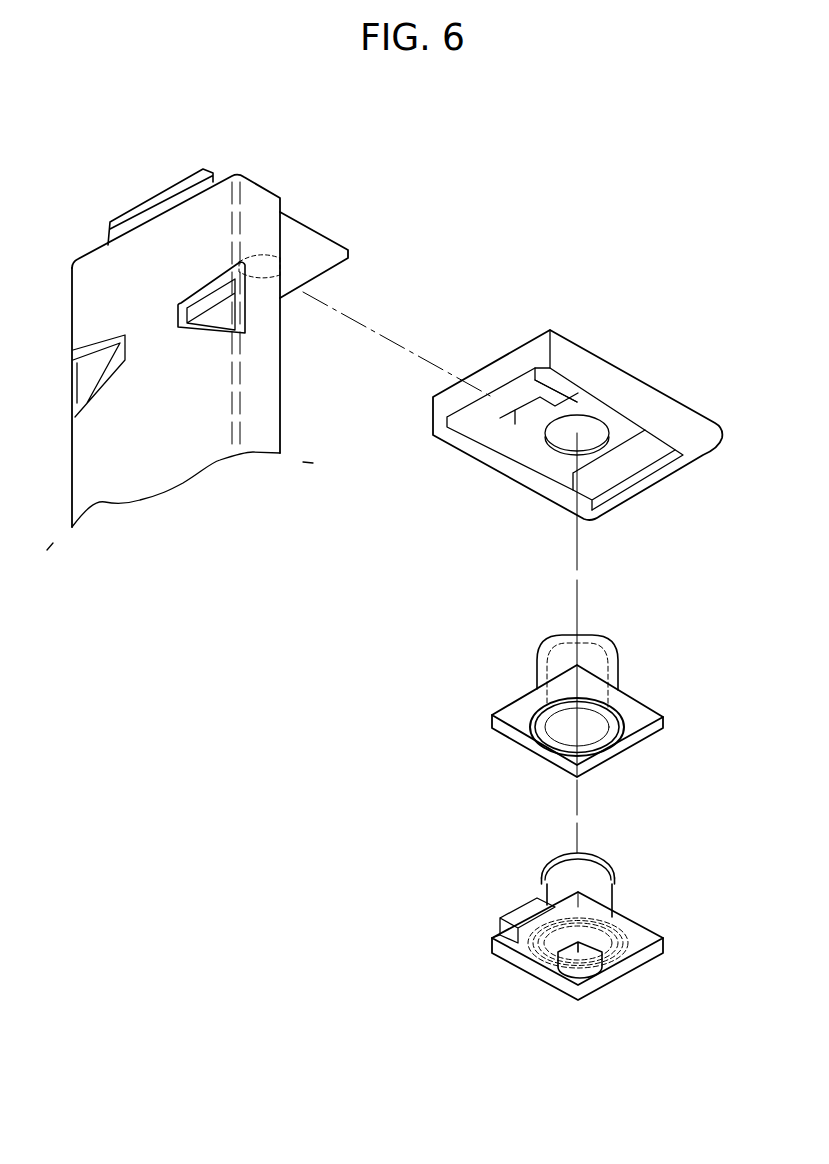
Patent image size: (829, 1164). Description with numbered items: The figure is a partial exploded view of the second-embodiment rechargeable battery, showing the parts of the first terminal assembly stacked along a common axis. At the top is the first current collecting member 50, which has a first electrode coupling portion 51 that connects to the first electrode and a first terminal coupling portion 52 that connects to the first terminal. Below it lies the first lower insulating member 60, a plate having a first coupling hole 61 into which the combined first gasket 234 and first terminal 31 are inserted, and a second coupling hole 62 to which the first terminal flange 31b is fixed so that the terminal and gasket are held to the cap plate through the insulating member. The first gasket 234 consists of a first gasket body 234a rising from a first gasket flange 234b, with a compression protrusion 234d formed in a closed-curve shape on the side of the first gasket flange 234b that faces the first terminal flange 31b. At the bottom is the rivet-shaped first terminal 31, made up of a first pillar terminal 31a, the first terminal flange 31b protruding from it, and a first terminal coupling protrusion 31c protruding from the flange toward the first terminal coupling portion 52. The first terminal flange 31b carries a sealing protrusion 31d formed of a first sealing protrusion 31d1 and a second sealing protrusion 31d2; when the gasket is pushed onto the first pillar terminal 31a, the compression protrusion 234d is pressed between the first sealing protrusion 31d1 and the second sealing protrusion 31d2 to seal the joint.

The first current collecting member 50 is at (195, 350).
The first electrode coupling portion 51 is at (260, 402).
The first terminal coupling portion 52 is at (303, 224).
The first lower insulating member 60 is at (580, 411).
The first coupling hole 61 is at (592, 433).
The second coupling hole 62 is at (537, 437).
The first gasket 234 is at (557, 691).
The first gasket body 234a is at (542, 652).
The first gasket flange 234b is at (513, 703).
The compression protrusion 234d is at (537, 743).
The first terminal 31 is at (538, 933).
The first pillar terminal 31a is at (600, 892).
The first terminal flange 31b is at (635, 960).
The first terminal coupling protrusion 31c is at (578, 967).
The sealing protrusion 31d is at (484, 952).
The first sealing protrusion 31d1 is at (542, 953).
The second sealing protrusion 31d2 is at (545, 957).